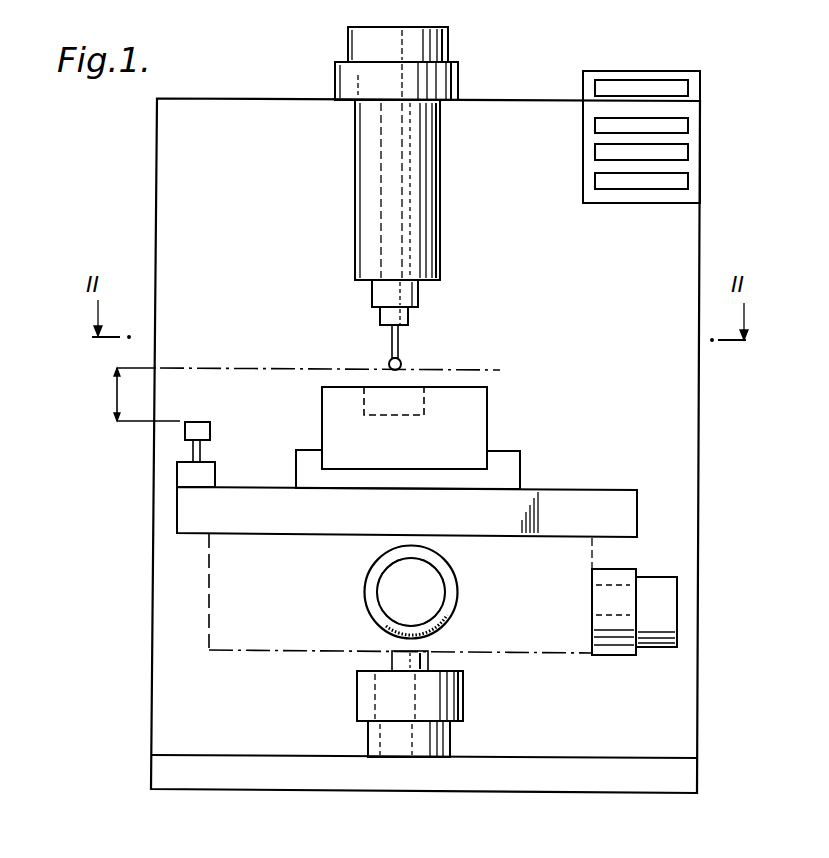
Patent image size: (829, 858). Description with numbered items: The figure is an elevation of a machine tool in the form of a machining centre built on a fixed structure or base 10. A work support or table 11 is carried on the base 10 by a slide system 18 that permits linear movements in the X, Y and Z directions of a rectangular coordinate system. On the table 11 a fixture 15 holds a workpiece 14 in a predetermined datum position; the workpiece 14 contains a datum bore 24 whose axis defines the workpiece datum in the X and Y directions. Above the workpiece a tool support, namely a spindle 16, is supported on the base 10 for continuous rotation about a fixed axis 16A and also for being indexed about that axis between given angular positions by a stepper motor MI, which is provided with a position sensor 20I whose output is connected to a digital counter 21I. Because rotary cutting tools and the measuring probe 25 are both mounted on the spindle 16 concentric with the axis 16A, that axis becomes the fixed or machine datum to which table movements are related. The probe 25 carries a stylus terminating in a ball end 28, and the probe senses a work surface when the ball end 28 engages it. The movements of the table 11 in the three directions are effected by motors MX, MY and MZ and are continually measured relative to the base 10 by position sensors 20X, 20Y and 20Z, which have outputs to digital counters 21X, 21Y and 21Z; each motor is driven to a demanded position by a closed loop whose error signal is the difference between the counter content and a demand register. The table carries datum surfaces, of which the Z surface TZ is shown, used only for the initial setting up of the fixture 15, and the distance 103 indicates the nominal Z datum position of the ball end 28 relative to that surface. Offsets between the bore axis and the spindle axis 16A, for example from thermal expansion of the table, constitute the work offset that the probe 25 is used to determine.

The base 10 is at (700, 393).
The table 11 is at (626, 490).
The workpiece 14 is at (487, 415).
The fixture 15 is at (520, 470).
The spindle 16 is at (418, 298).
The spindle axis 16A is at (383, 192).
The slide system 18 is at (400, 616).
The position sensor 20I is at (448, 42).
The X position sensor 20X is at (677, 628).
The Y position sensor 20Y is at (365, 590).
The Z position sensor 20Z is at (368, 738).
The digital counter 21I is at (688, 88).
The X digital counter 21X is at (688, 125).
The Y digital counter 21Y is at (688, 152).
The Z digital counter 21Z is at (688, 182).
The datum bore 24 is at (424, 400).
The probe 25 is at (392, 345).
The ball end 28 is at (401, 361).
The nominal Z datum position 103 is at (117, 394).
The stepper motor MI is at (458, 78).
The X motor MX is at (636, 590).
The Y motor MY is at (457, 592).
The Z motor MZ is at (357, 688).
The Z table datum surface TZ is at (197, 422).